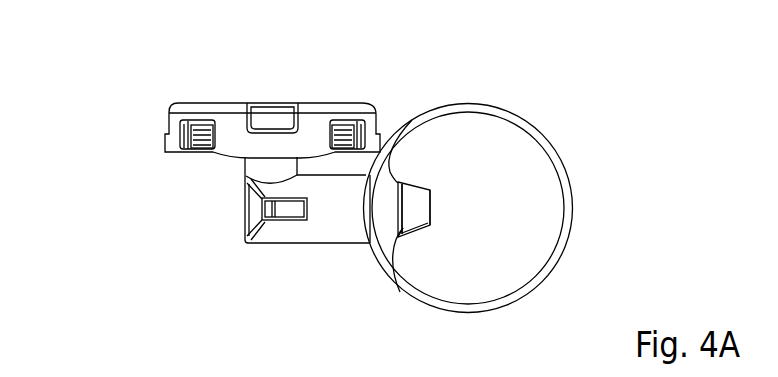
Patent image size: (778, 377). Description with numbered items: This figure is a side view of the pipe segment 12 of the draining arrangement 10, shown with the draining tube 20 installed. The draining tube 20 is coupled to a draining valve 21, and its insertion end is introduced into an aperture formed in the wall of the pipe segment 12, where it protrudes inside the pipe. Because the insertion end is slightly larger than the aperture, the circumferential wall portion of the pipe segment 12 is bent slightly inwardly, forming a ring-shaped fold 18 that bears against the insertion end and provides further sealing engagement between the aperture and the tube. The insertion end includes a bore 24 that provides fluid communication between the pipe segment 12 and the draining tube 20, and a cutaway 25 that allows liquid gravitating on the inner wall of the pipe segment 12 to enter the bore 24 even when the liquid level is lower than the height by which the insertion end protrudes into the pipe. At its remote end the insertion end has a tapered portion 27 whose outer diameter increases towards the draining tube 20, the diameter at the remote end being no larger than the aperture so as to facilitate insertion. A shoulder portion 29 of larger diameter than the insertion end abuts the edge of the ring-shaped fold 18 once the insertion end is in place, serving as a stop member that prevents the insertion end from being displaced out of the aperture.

The draining arrangement 10 is at (143, 120).
The pipe segment 12 is at (529, 122).
The ring-shaped fold 18 is at (377, 181).
The draining tube 20 is at (319, 219).
The draining valve 21 is at (317, 128).
The bore 24 is at (430, 211).
The cutaway 25 is at (432, 227).
The tapered portion 27 is at (400, 292).
The shoulder portion 29 is at (407, 222).